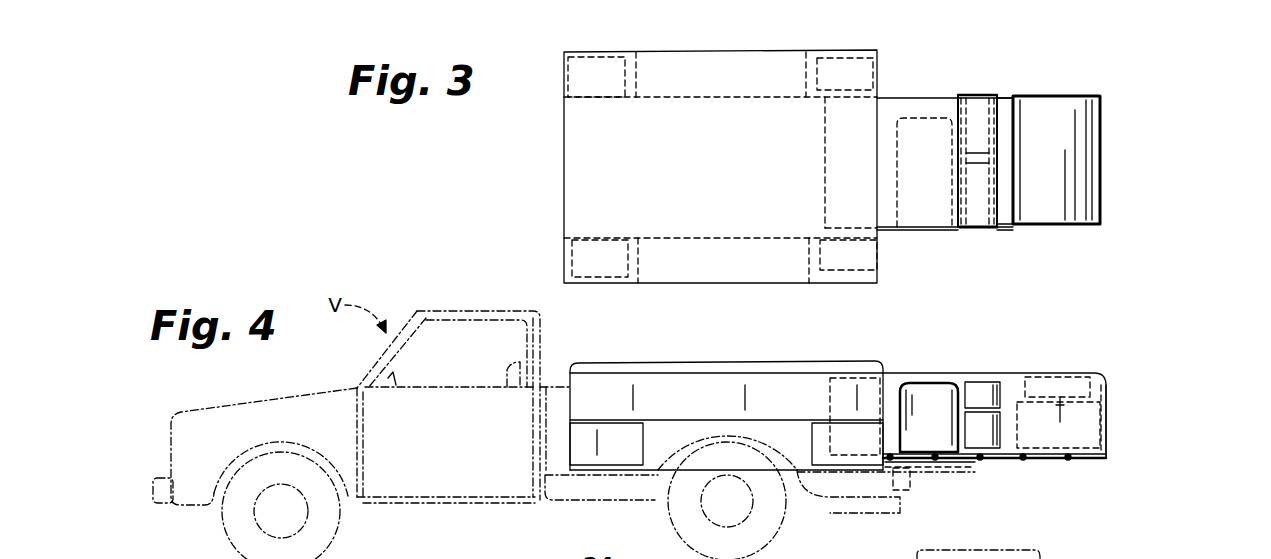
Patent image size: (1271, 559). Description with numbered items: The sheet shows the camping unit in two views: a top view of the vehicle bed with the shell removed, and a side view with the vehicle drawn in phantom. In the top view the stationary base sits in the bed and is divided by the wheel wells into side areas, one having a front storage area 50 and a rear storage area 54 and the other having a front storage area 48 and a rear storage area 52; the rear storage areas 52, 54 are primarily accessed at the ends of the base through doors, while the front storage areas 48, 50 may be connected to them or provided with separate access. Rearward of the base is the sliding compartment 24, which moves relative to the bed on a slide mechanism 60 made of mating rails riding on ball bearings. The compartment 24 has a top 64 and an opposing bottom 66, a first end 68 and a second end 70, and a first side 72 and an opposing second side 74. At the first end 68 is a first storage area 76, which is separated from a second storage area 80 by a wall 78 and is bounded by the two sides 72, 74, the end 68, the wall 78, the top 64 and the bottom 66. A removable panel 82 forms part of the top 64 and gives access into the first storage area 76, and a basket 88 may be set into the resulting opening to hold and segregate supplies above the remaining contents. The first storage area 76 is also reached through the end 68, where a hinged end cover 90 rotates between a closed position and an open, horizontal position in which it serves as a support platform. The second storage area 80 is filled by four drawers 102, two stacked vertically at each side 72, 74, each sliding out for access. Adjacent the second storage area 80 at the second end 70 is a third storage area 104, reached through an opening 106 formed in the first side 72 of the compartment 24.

In FIG. 4, the sliding compartment 24 is at (1108, 374).
In FIG. 3, the front storage area 48 is at (603, 72).
In FIG. 3, the front storage area 50 is at (612, 268).
In FIG. 3, the rear storage area 52 is at (840, 72).
In FIG. 3, the rear storage area 54 is at (850, 266).
In FIG. 4, the slide mechanism 60 is at (1045, 466).
In FIG. 4, the top 64 is at (1003, 376).
In FIG. 4, the bottom 66 is at (1090, 460).
In FIG. 3, the first end 68 is at (1103, 132).
In FIG. 4, the first end 68 is at (1107, 417).
In FIG. 3, the second end 70 is at (823, 132).
In FIG. 4, the second end 70 is at (827, 395).
In FIG. 3, the first side 72 is at (998, 218).
In FIG. 3, the second side 74 is at (1003, 97).
In FIG. 4, the first storage area 76 is at (913, 374).
In FIG. 3, the wall 78 is at (1002, 232).
In FIG. 3, the second storage area 80 is at (978, 102).
In FIG. 3, the removable panel 82 is at (1063, 163).
In FIG. 4, the basket 88 is at (1055, 376).
In FIG. 4, the end cover 90 is at (1107, 390).
In FIG. 3, the drawers 102 is at (987, 97).
In FIG. 3, the third storage area 104 is at (920, 120).
In FIG. 3, the opening 106 is at (927, 235).
In FIG. 4, the opening 106 is at (945, 445).